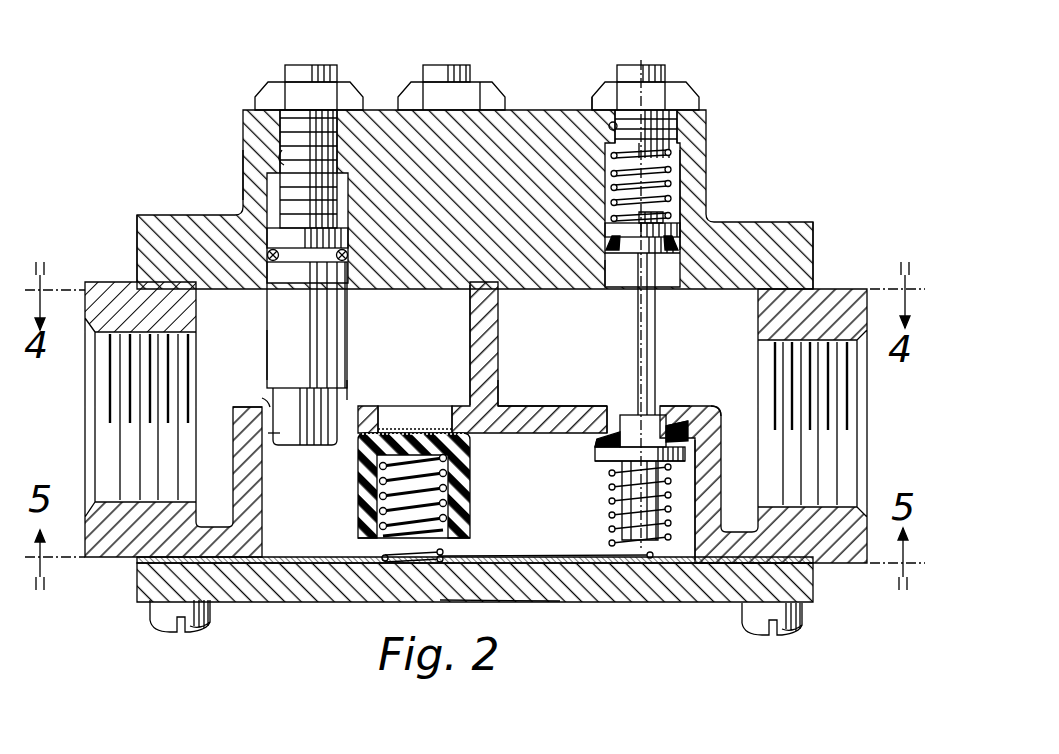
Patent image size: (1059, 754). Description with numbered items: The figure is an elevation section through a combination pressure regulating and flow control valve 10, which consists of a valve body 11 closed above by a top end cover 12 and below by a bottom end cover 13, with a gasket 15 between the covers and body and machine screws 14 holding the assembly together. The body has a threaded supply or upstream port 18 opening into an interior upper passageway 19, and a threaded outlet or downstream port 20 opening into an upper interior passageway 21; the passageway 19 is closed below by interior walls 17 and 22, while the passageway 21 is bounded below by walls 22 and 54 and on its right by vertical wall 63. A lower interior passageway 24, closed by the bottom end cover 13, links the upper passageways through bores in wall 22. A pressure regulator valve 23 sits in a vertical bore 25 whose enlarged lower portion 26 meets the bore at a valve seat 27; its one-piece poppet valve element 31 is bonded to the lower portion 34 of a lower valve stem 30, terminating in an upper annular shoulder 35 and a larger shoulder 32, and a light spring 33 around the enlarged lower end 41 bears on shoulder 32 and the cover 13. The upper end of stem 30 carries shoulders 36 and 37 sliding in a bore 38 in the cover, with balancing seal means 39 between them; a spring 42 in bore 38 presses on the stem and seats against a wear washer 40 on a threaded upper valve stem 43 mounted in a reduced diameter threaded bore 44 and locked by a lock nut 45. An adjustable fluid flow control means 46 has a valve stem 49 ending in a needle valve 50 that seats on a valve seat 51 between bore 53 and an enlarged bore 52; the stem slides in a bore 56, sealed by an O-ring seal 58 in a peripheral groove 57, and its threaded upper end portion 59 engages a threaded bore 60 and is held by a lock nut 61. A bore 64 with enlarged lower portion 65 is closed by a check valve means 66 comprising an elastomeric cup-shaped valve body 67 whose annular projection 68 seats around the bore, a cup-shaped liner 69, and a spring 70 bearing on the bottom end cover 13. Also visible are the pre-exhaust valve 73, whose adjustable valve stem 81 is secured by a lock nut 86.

The combination pressure regulating and flow control valve 10 is at (240, 172).
The valve body 11 is at (830, 300).
The top end cover 12 is at (695, 178).
The bottom end cover 13 is at (635, 602).
The machine screws 14 is at (165, 612).
The gasket 15 is at (123, 270).
The valve body interior wall 17 is at (712, 500).
The supply or upstream port 18 is at (825, 505).
The interior upper passageway 19 is at (740, 283).
The outlet or downstream port 20 is at (105, 500).
The upper interior passageway 21 is at (213, 278).
The valve body interior wall 22 is at (548, 420).
The pressure regulator valve 23 is at (698, 82).
The lower interior passageway 24 is at (545, 565).
The bore or passageway 25 is at (674, 428).
The enlarged bore portion 26 is at (692, 430).
The valve seat 27 is at (607, 430).
The lower valve stem 30 is at (628, 331).
The one-piece poppet valve element 31 is at (655, 418).
The larger integral annular shoulder 32 is at (600, 462).
The spring 33 is at (610, 506).
The lower portion of lower valve stem 34 is at (600, 442).
The integral annular shoulder 35 is at (648, 394).
The annular shoulder or flange 36 is at (612, 286).
The annular shoulder or flange 37 is at (604, 224).
The bore 38 is at (672, 199).
The balancing seal means 39 is at (606, 247).
The wear washer 40 is at (660, 143).
The enlarged lower end of valve stem 41 is at (637, 478).
The spring 42 is at (650, 166).
The threaded upper valve stem 43 is at (630, 70).
The reduced diameter threaded bore 44 is at (609, 126).
The lock nut 45 is at (600, 95).
The adjustable fluid flow control means 46 is at (262, 78).
The valve stem 49 is at (292, 342).
The conically shaped valve (needle valve) 50 is at (312, 432).
The valve seat 51 is at (268, 400).
The enlarged diameter bore 52 is at (343, 395).
The bore or passageway 53 is at (270, 435).
The valve body interior wall 54 is at (245, 461).
The bore 56 is at (342, 197).
The peripheral groove 57 is at (307, 325).
The O-ring seal 58 is at (346, 258).
The reduced diameter threaded upper end portion 59 is at (290, 128).
The threaded bore 60 is at (282, 158).
The lock nut 61 is at (350, 97).
The vertical valve body interior wall 63 is at (485, 337).
The bore or passageway 64 is at (442, 412).
The enlarged lower bore portion 65 is at (372, 408).
The check valve means 66 is at (372, 513).
The cup-shaped valve body 67 is at (468, 471).
The annular axially extended projection 68 is at (497, 430).
The cup-shaped liner 69 is at (362, 541).
The spring 70 is at (400, 562).
The pre-exhaust valve 73 is at (493, 79).
The adjustable valve stem 81 is at (432, 70).
The lock nut 86 is at (500, 96).